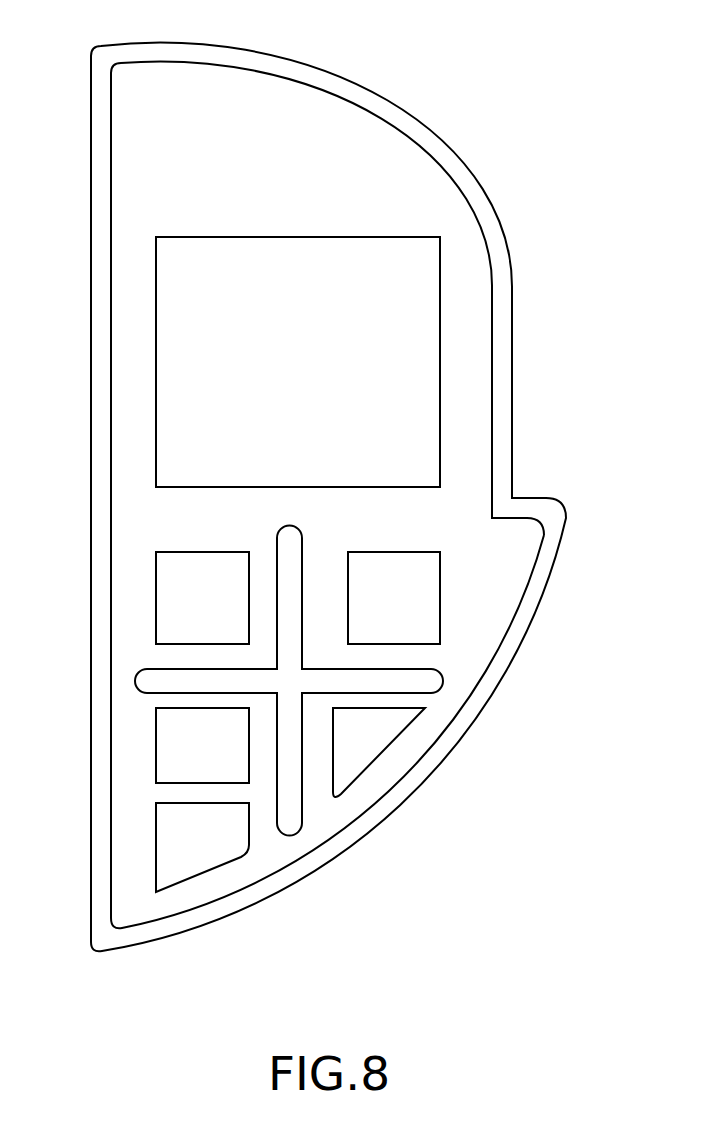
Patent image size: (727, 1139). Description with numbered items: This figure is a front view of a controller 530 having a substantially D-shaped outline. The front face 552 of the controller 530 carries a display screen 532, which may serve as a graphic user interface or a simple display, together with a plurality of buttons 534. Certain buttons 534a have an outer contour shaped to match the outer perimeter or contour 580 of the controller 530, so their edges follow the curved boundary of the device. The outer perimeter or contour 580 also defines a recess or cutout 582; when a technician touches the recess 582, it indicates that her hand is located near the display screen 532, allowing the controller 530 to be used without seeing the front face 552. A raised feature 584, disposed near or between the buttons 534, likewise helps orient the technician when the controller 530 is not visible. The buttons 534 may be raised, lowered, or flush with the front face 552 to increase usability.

The controller 530 is at (507, 72).
The display screen 532 is at (165, 347).
The buttons 534 is at (175, 597).
The buttons 534a is at (380, 745).
The front face 552 is at (308, 108).
The outer perimeter or contour 580 is at (326, 870).
The recess or cutout 582 is at (530, 484).
The raised feature 584 is at (425, 681).